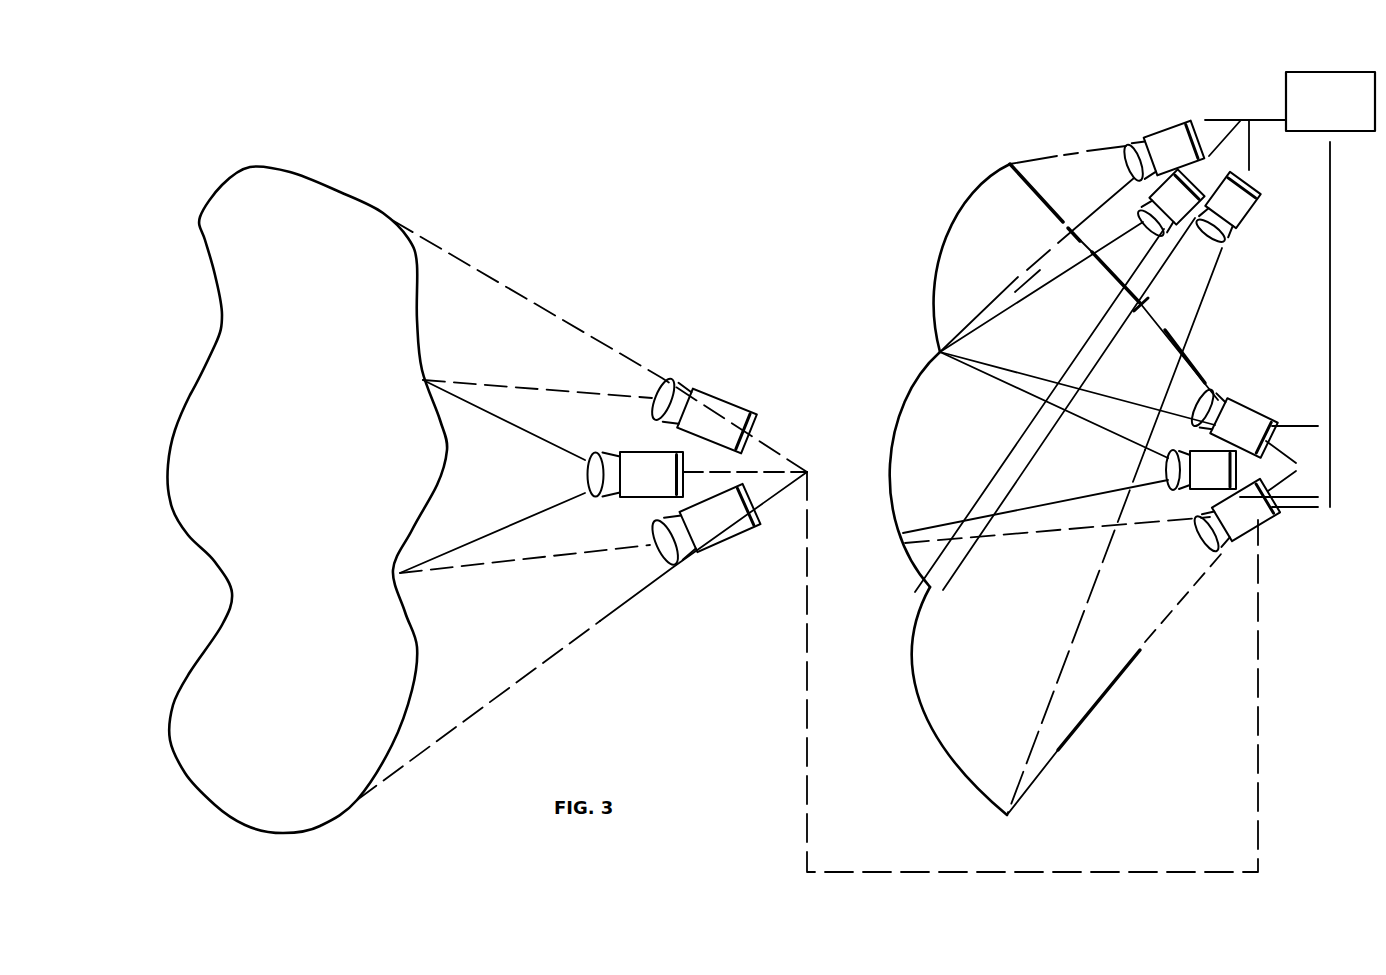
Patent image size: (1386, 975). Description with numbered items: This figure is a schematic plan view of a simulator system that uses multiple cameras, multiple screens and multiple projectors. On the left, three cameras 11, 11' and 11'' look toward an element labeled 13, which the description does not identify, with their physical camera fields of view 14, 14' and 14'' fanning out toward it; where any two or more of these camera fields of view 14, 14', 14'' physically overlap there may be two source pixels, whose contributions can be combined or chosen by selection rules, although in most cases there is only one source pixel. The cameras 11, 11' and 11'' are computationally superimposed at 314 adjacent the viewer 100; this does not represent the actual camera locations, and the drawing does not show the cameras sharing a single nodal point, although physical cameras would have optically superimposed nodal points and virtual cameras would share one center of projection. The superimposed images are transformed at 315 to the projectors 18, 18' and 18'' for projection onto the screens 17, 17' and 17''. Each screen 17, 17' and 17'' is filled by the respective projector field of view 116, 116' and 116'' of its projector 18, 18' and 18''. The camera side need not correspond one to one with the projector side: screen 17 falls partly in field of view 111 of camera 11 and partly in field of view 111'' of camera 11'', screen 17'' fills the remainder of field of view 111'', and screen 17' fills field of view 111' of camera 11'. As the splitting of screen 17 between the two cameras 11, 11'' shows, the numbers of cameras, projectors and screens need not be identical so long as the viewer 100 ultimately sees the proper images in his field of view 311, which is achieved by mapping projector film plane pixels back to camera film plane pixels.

The object being measured 13 is at (368, 200).
The camera 11 is at (698, 486).
The camera 11' is at (703, 408).
The camera 11'' is at (704, 537).
The camera field of view 14 is at (492, 476).
The camera field of view 14' is at (599, 346).
The camera field of view 14'' is at (582, 636).
The screen 17 is at (889, 469).
The screen 17' is at (944, 258).
The screen 17'' is at (923, 701).
The projector 18 is at (1060, 380).
The projector 18' is at (1072, 224).
The projector 18'' is at (1117, 493).
The viewer 100 is at (1322, 452).
The field of view of camera 111 is at (1069, 442).
The field of view of camera 111' is at (1119, 405).
The field of view of camera 111'' is at (1115, 532).
The field of view of projector 116 is at (1082, 286).
The field of view of projector 116' is at (1055, 196).
The field of view of projector 116'' is at (1145, 316).
The field of view of viewer 311 is at (1198, 356).
The computational superposition point 314 is at (807, 756).
The transform 315 is at (1282, 113).